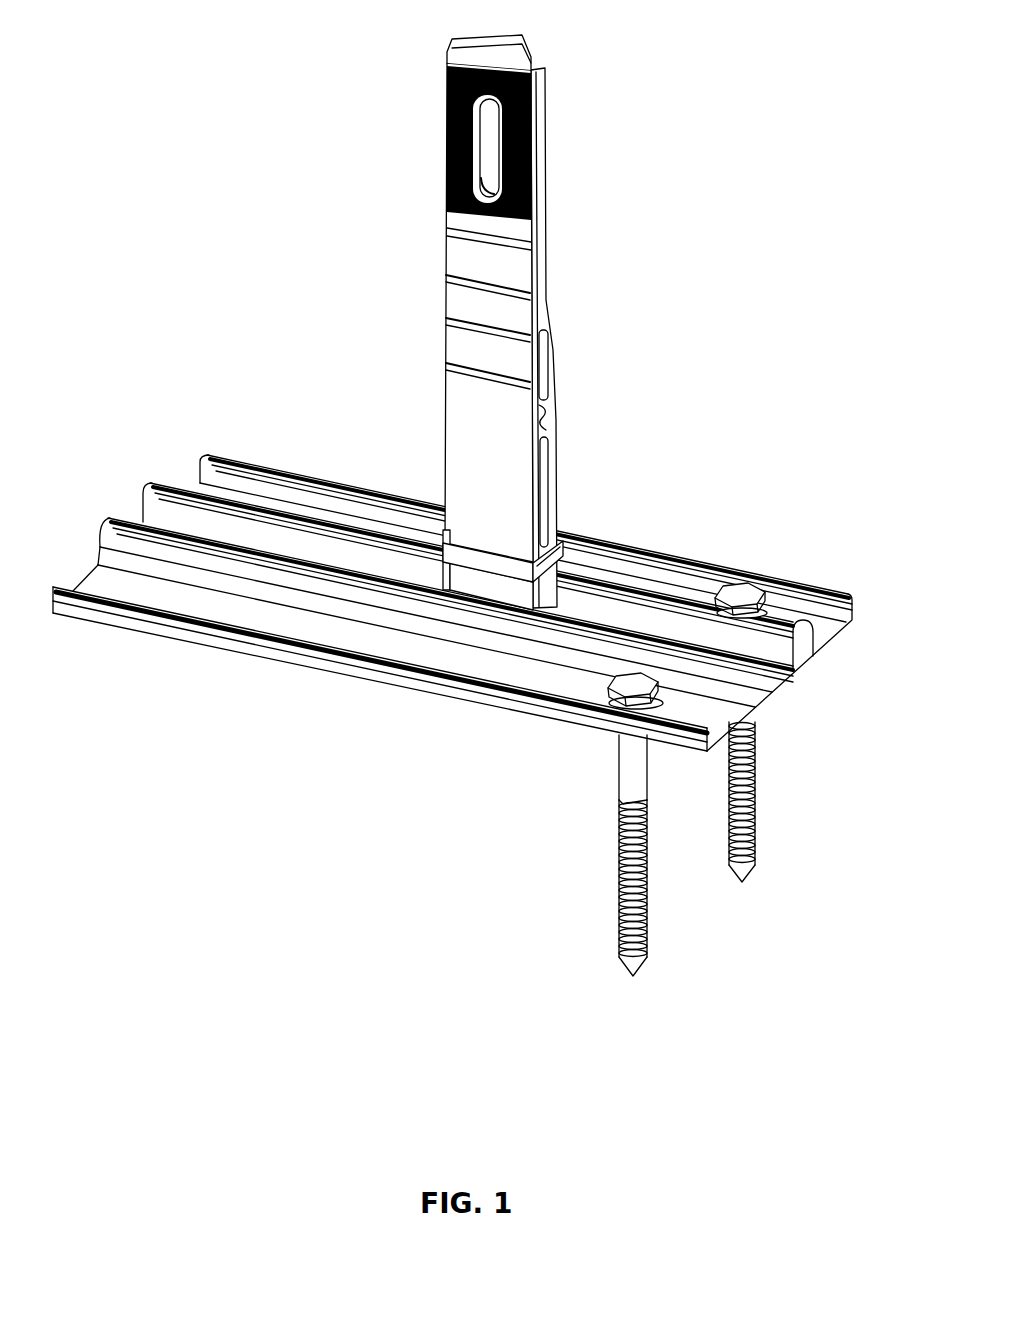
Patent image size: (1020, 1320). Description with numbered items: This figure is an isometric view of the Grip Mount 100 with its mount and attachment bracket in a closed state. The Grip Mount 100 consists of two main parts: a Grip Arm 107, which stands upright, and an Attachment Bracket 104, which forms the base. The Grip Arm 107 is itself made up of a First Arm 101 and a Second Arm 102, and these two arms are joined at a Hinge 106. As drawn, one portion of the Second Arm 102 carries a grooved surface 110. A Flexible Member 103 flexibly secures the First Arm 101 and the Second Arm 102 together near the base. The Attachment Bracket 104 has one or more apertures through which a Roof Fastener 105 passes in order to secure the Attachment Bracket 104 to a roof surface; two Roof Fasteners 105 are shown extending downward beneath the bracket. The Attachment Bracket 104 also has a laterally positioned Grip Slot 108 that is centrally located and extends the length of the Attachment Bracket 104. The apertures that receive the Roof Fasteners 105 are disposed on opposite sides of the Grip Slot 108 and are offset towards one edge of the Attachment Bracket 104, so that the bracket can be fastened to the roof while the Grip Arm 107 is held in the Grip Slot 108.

The grip mount 100 is at (148, 47).
The first arm 101 is at (494, 321).
The second arm 102 is at (477, 298).
The flexible member 103 is at (470, 572).
The attachment bracket 104 is at (190, 655).
The roof fastener 105 is at (657, 885).
The hinge 106 is at (556, 425).
The grip arm 107 is at (398, 282).
The grip slot 108 is at (795, 675).
The grooved surface 110 is at (540, 176).